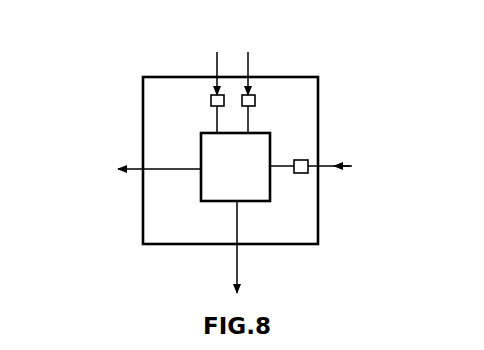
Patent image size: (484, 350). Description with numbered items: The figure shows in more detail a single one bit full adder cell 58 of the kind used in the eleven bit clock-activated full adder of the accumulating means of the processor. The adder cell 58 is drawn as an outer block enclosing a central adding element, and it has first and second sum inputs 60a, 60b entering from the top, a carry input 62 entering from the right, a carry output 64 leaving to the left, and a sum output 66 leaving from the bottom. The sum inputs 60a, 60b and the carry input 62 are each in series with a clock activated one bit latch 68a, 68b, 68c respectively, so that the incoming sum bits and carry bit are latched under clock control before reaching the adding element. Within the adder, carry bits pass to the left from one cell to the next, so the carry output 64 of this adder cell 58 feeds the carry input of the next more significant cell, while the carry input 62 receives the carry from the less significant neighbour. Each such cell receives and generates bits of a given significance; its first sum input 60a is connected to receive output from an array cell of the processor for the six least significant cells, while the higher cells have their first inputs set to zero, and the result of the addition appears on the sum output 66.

The adder cell 58 is at (318, 84).
The first sum input 60a is at (216, 53).
The second sum input 60b is at (248, 52).
The carry input 62 is at (345, 167).
The carry output 64 is at (124, 172).
The sum output 66 is at (238, 263).
The clock activated one bit latch 68a is at (211, 100).
The clock activated one bit latch 68b is at (256, 100).
The clock activated one bit latch 68c is at (300, 173).